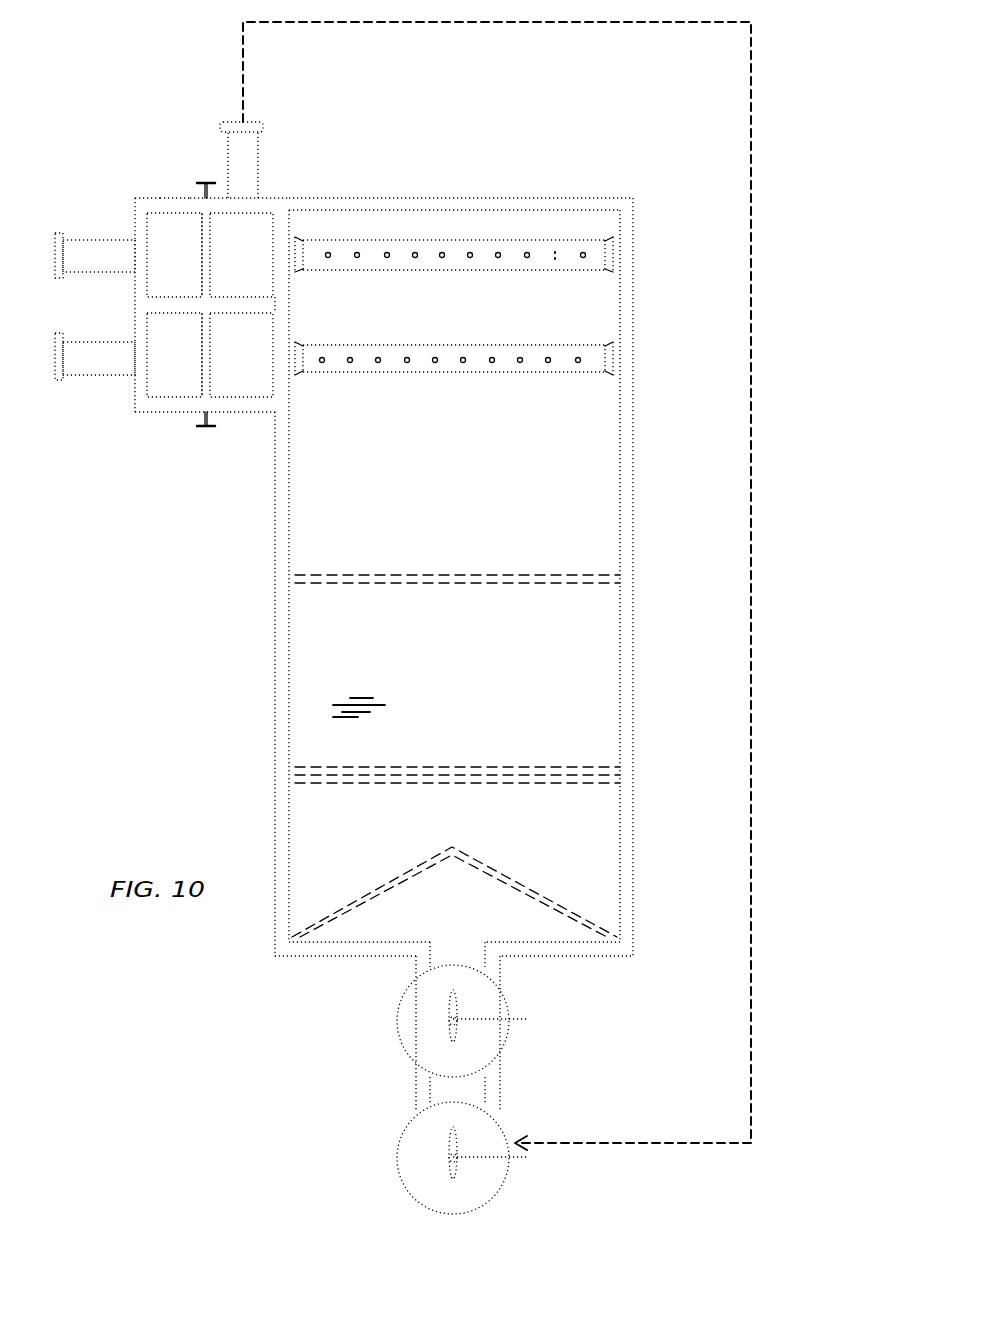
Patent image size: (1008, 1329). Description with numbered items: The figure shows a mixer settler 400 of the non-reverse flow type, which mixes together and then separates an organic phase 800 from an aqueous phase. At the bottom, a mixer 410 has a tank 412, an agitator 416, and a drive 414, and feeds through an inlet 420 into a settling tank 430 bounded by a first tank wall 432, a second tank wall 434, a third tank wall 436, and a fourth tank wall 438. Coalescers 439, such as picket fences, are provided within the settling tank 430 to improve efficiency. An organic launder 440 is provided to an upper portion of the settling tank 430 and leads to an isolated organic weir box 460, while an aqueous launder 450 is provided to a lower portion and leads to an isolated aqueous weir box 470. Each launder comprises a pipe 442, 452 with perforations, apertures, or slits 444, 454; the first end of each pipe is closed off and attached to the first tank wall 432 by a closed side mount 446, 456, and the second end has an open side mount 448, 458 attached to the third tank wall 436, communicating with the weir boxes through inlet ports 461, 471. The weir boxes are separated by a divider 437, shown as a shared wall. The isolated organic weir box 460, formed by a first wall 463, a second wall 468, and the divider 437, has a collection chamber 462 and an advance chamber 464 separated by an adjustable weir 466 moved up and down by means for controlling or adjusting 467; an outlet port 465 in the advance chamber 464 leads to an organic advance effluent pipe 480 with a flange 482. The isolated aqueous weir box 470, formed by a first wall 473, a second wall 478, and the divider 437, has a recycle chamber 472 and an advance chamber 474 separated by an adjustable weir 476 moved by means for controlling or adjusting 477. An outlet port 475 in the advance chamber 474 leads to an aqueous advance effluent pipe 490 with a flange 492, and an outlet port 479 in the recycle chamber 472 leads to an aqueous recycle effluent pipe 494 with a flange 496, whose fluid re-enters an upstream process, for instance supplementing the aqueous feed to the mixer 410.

The mixer settler 400 is at (142, 85).
The mixer 410 is at (392, 1036).
The tank 412 is at (397, 1012).
The drive 414 is at (478, 1019).
The agitator 416 is at (452, 998).
The inlet 420 is at (460, 957).
The settling tank 430 is at (484, 676).
The first tank wall 432 is at (622, 667).
The second tank wall 434 is at (575, 945).
The third tank wall 436 is at (283, 667).
The divider 437 is at (264, 305).
The fourth tank wall 438 is at (431, 210).
The coalescers 439 is at (497, 572).
The organic launder 440 is at (409, 372).
The pipe 442 is at (445, 372).
The perforations, apertures, or slits 444 is at (492, 363).
The closed side mount 446 is at (612, 370).
The open side mount 448 is at (298, 369).
The aqueous launder 450 is at (481, 267).
The pipe 452 is at (537, 268).
The perforations, apertures, or slits 454 is at (357, 258).
The closed side mount 456 is at (612, 268).
The open side mount 458 is at (302, 258).
The isolated organic weir box 460 is at (156, 413).
The inlet port 461 is at (271, 360).
The collection chamber 462 is at (254, 335).
The first wall 463 is at (136, 387).
The advance chamber 464 is at (191, 383).
The outlet port 465 is at (153, 354).
The adjustable weir 466 is at (206, 391).
The means for controlling or adjusting 467 is at (199, 428).
The second wall 468 is at (240, 407).
The isolated aqueous weir box 470 is at (146, 196).
The inlet port 471 is at (271, 263).
The recycle chamber 472 is at (254, 284).
The first wall 473 is at (136, 222).
The advance chamber 474 is at (191, 246).
The outlet port 475 is at (153, 258).
The adjustable weir 476 is at (204, 266).
The means for controlling or adjusting 477 is at (213, 181).
The second wall 478 is at (168, 200).
The outlet port 479 is at (246, 218).
The organic advance effluent pipe 480 is at (97, 369).
The flange 482 is at (62, 378).
The aqueous advance effluent pipe 490 is at (95, 240).
The flange 492 is at (58, 238).
The aqueous recycle effluent pipe 494 is at (258, 160).
The flange 496 is at (258, 127).
The organic phase 800 is at (360, 696).